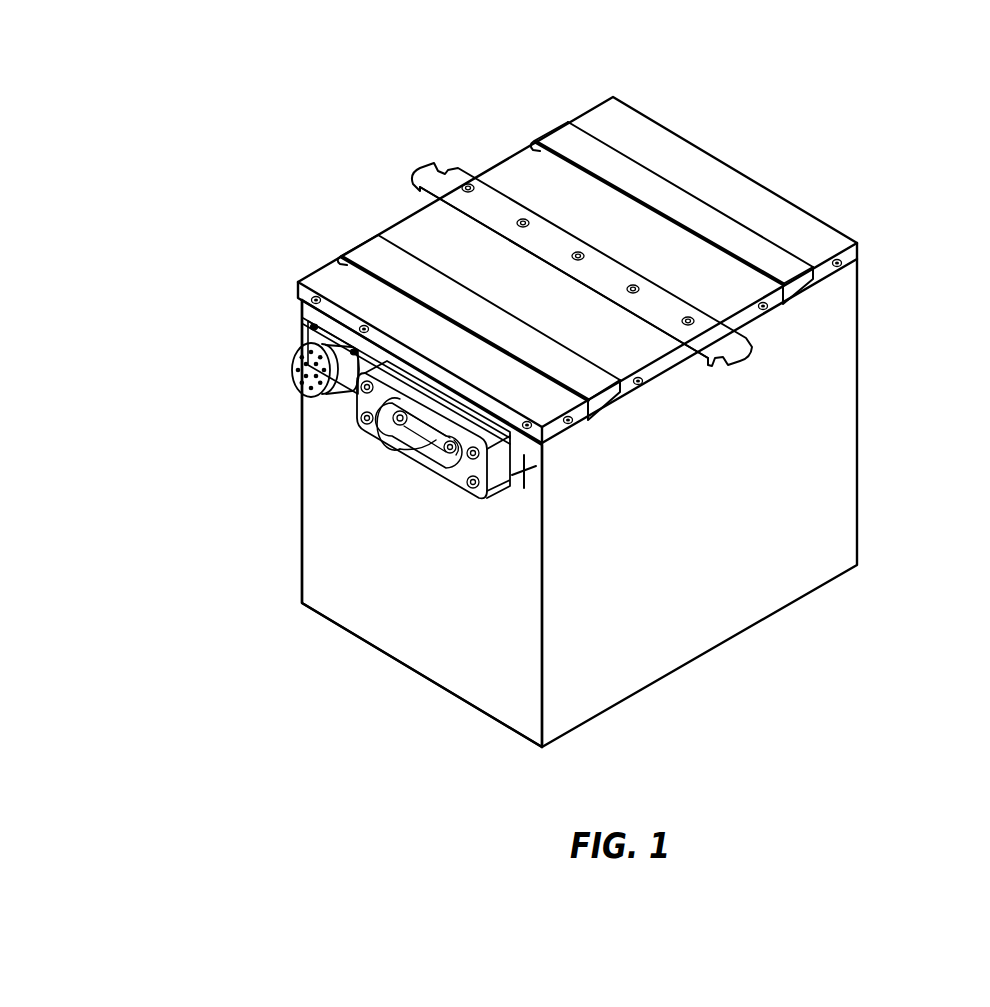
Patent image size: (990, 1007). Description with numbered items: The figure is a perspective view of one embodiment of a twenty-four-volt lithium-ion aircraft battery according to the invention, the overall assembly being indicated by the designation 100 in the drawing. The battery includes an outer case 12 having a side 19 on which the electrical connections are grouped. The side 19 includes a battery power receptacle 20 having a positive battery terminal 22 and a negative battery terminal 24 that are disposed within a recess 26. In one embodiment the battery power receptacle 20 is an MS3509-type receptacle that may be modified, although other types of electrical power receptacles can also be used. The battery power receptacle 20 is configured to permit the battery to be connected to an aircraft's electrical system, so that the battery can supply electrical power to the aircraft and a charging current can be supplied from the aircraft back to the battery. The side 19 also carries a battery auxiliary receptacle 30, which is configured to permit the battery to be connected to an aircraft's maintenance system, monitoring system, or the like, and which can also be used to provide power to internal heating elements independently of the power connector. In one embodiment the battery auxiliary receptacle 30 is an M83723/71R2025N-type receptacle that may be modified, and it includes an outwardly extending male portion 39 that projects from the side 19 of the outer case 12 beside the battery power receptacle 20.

The battery system 100 is at (802, 128).
The outer case 12 is at (835, 427).
The side 19 is at (460, 640).
The battery power receptacle 20 is at (375, 432).
The positive battery terminal 22 is at (452, 453).
The negative battery terminal 24 is at (396, 416).
The recess 26 is at (398, 445).
The battery auxiliary receptacle 30 is at (292, 352).
The outwardly extending male portion 39 is at (316, 332).